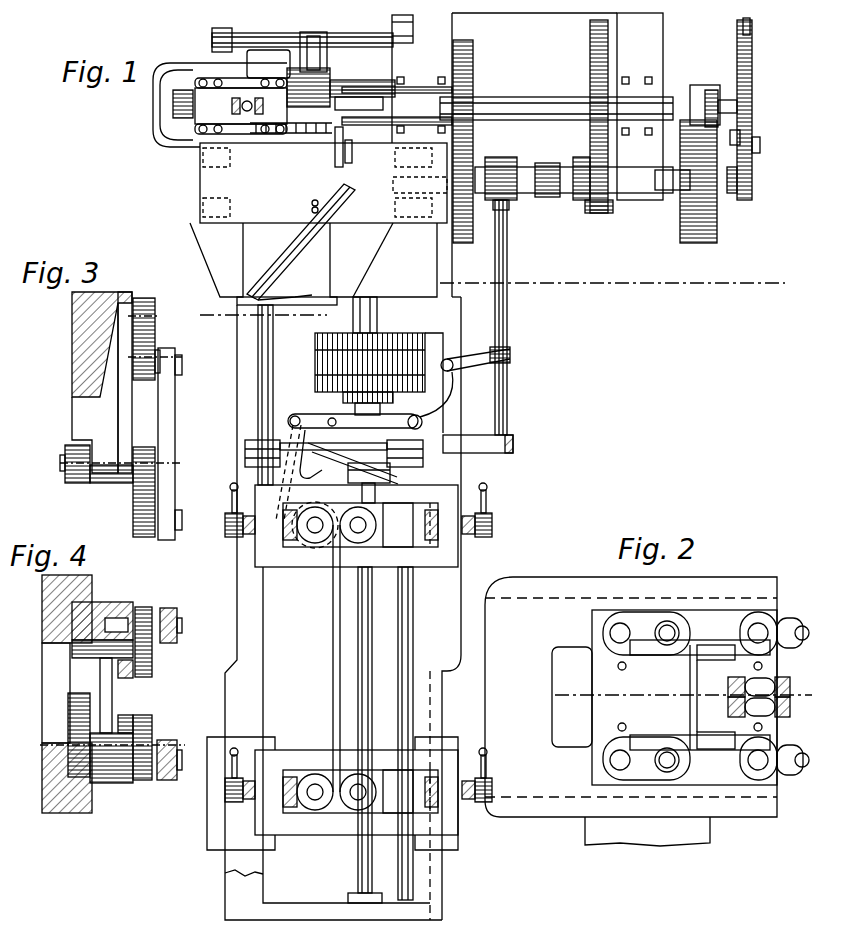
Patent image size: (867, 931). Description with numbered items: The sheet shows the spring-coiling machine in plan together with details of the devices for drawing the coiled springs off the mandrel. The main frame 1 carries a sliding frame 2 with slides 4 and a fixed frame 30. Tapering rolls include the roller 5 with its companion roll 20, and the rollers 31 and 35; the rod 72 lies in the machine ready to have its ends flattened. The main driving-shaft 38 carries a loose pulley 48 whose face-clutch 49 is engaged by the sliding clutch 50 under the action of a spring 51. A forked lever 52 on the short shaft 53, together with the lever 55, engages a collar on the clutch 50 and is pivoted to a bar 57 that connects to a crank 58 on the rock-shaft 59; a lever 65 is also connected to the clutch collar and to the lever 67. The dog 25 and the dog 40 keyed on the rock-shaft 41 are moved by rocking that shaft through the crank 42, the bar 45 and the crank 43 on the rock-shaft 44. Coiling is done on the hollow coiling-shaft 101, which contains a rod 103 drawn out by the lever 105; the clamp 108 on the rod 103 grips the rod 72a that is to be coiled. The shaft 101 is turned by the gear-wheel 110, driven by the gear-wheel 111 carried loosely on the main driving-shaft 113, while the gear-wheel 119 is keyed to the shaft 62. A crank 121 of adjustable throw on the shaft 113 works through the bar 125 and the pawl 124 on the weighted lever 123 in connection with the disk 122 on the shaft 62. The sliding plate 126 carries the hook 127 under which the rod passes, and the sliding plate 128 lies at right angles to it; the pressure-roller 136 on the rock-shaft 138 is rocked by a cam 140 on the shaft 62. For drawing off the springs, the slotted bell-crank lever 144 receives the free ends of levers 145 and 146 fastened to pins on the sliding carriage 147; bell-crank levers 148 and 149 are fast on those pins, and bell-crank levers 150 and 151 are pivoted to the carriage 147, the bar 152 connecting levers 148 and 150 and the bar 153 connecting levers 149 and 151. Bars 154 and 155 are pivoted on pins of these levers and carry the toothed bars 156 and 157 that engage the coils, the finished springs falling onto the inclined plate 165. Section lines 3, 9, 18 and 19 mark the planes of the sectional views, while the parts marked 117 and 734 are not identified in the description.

In FIG. 1, the main frame 1 is at (439, 466).
In FIG. 1, the sliding frame 2 is at (356, 792).
In FIG. 2, the section line 3 is at (683, 696).
In FIG. 1, the slides 4 is at (332, 796).
In FIG. 1, the roller 5 is at (315, 792).
In FIG. 1, the section line 9 is at (486, 299).
In FIG. 1, the section line 18 is at (224, 792).
In FIG. 1, the section line 19 is at (410, 612).
In FIG. 1, the roll for tapering 20 is at (358, 795).
In FIG. 1, the dog 25 is at (398, 791).
In FIG. 1, the fixed frame 30 is at (356, 526).
In FIG. 1, the roller 31 is at (315, 525).
In FIG. 1, the roller 35 is at (358, 526).
In FIG. 1, the main driving-shaft 38 is at (363, 631).
In FIG. 1, the dog 40 is at (398, 525).
In FIG. 1, the rock-shaft 41 is at (413, 629).
In FIG. 1, the crank 42 is at (424, 461).
In FIG. 1, the crank 43 is at (246, 463).
In FIG. 1, the rock-shaft 44 is at (274, 364).
In FIG. 1, the bar 45 is at (295, 414).
In FIG. 1, the loose pulley 48 is at (379, 365).
In FIG. 1, the face-clutch 49 is at (394, 398).
In FIG. 1, the sliding clutch 50 is at (366, 413).
In FIG. 1, the spring 51 is at (352, 472).
In FIG. 1, the forked lever 52 is at (436, 394).
In FIG. 1, the short shaft 53 is at (423, 420).
In FIG. 1, the lever 55 is at (424, 440).
In FIG. 1, the bar 57 is at (468, 368).
In FIG. 1, the crank 58 is at (511, 356).
In FIG. 1, the rock-shaft 59 is at (508, 323).
In FIG. 1, the shaft 62 is at (715, 100).
In FIG. 1, the lever 65 is at (353, 422).
In FIG. 1, the lever 67 is at (293, 433).
In FIG. 1, the rod 72 is at (334, 663).
In FIG. 1, the rod 72a is at (353, 150).
In FIG. 1, the hollow coiling-shaft 101 is at (588, 108).
In FIG. 1, the rod 103 is at (702, 124).
In FIG. 1, the lever 105 is at (707, 97).
In FIG. 1, the clamp 108 is at (355, 100).
In FIG. 1, the gear-wheel 110 is at (474, 52).
In FIG. 1, the gear-wheel 111 is at (470, 228).
In FIG. 1, the main driving-shaft 113 is at (668, 192).
In FIG. 1, the pinion 117 is at (598, 214).
In FIG. 1, the gear-wheel 119 is at (591, 60).
In FIG. 1, the crank 121 is at (732, 195).
In FIG. 1, the disk 122 is at (755, 155).
In FIG. 1, the lever 123 is at (753, 85).
In FIG. 1, the pawl 124 is at (756, 52).
In FIG. 1, the bar 125 is at (742, 136).
In FIG. 1, the sliding plate 126 is at (323, 183).
In FIG. 1, the hook 127 is at (336, 145).
In FIG. 1, the sliding plate 128 is at (313, 264).
In FIG. 1, the pressure-roller 136 is at (330, 62).
In FIG. 1, the rock-shaft 138 is at (302, 35).
In FIG. 2, the cam 140 is at (774, 641).
In FIG. 2, the bell-crank lever 144 is at (716, 697).
In FIG. 2, the lever 145 is at (759, 707).
In FIG. 3, the lever 146 is at (72, 486).
In FIG. 4, the lever 146 is at (80, 780).
In FIG. 2, the lever 146 is at (759, 687).
In FIG. 1, the sliding carriage 147 is at (220, 105).
In FIG. 3, the sliding carriage 147 is at (102, 387).
In FIG. 4, the sliding carriage 147 is at (112, 694).
In FIG. 2, the sliding carriage 147 is at (667, 697).
In FIG. 4, the bell-crank lever 148 is at (143, 612).
In FIG. 2, the bell-crank lever 148 is at (774, 751).
In FIG. 3, the bell-crank lever 149 is at (138, 496).
In FIG. 4, the bell-crank lever 149 is at (142, 782).
In FIG. 2, the bell-crank lever 150 is at (646, 751).
In FIG. 3, the bell-crank lever 151 is at (156, 335).
In FIG. 2, the bell-crank lever 151 is at (650, 655).
In FIG. 4, the bar 152 is at (128, 678).
In FIG. 2, the bar 152 is at (693, 750).
In FIG. 3, the bar 153 is at (126, 426).
In FIG. 4, the bar 153 is at (126, 716).
In FIG. 2, the bar 153 is at (690, 660).
In FIG. 4, the bar 154 is at (168, 645).
In FIG. 3, the bar 155 is at (170, 470).
In FIG. 4, the bar 155 is at (165, 740).
In FIG. 1, the toothed metal bar 156 is at (300, 135).
In FIG. 1, the toothed metal bar 157 is at (302, 68).
In FIG. 1, the inclined plate 165 is at (255, 57).
In FIG. 1, the bar 734 is at (290, 253).